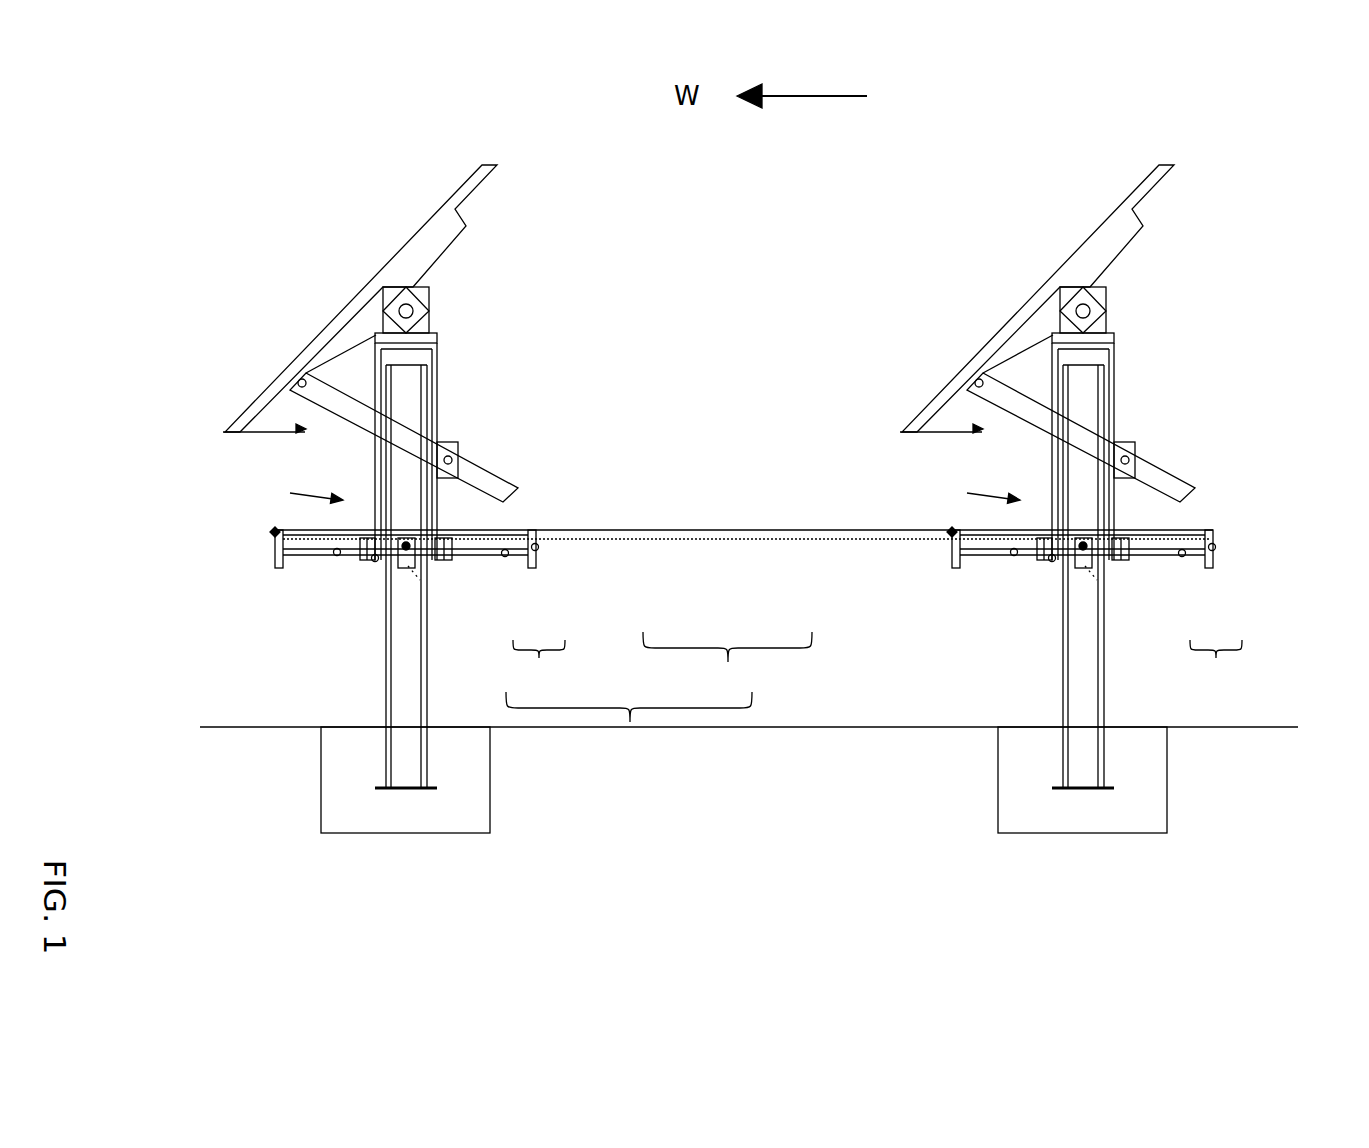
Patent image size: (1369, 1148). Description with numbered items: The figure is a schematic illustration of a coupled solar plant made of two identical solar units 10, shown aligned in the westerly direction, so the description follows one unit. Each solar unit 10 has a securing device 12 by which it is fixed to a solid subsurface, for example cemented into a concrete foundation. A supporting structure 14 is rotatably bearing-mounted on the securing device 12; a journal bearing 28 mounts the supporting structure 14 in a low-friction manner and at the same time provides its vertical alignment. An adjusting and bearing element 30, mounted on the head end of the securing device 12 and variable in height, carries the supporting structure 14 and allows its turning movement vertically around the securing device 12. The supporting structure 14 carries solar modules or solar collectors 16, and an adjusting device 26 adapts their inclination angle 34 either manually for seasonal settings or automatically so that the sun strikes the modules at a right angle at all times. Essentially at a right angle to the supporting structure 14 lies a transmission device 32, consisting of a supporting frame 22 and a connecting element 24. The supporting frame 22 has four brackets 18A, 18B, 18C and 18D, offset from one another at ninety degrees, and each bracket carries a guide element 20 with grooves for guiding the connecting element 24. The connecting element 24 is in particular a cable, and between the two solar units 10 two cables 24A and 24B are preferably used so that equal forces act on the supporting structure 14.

The solar unit 10 is at (765, 461).
The securing device 12 is at (381, 676).
The supporting structure 14 is at (439, 371).
The solar modules and/or solar collectors 16 is at (471, 190).
The bracket 18A is at (334, 555).
The bracket 18B is at (420, 580).
The bracket 18C is at (507, 556).
The bracket 18D is at (625, 488).
The guide element 20 is at (537, 551).
The supporting frame 22 is at (877, 669).
The connecting element 24 is at (727, 668).
The cable 24A is at (592, 532).
The cable 24B is at (685, 541).
The adjusting device 26 is at (484, 477).
The journal bearing 28 is at (373, 561).
The adjusting and bearing element 30 is at (414, 357).
The transmission device 32 is at (629, 728).
The inclination angle 34 is at (277, 415).